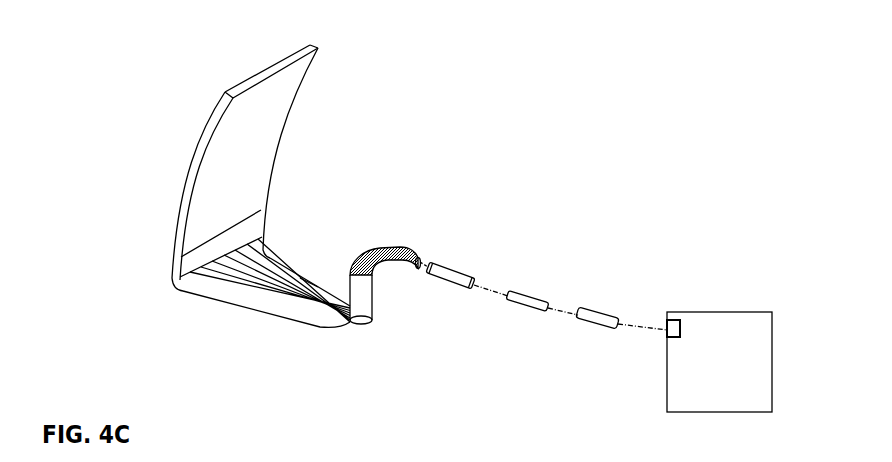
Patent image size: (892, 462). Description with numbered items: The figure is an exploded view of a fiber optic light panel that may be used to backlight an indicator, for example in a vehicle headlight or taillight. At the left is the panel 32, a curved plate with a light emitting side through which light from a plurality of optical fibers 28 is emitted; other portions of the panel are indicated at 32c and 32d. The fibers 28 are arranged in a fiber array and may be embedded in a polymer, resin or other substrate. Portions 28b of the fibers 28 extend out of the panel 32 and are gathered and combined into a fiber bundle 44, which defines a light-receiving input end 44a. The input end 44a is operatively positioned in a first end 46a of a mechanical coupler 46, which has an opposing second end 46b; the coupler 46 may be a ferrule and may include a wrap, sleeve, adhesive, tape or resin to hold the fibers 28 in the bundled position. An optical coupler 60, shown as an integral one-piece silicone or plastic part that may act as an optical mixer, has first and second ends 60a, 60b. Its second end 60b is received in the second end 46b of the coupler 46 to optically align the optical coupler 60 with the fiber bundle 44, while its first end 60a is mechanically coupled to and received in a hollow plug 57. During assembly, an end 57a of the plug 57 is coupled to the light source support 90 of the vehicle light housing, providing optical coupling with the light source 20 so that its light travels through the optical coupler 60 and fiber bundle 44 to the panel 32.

The panel 32 is at (209, 168).
The lens front edge 32c is at (176, 218).
The lens face 32d is at (247, 192).
The optical fibers 28 is at (282, 274).
The portions of the optical fibers 28b is at (312, 285).
The fiber bundle 44 is at (386, 259).
The input end 44a is at (410, 267).
The mechanical coupler 46 is at (456, 280).
The first end of mechanical coupler 46a is at (432, 259).
The second end of mechanical coupler 46b is at (472, 289).
The optical coupler 60 is at (531, 305).
The first end of optical coupler 60a is at (545, 302).
The second end of optical coupler 60b is at (509, 295).
The hollow plug 57 is at (620, 293).
The end of plug 57a is at (618, 320).
The light source 20 is at (665, 329).
The light source support 90 is at (694, 333).